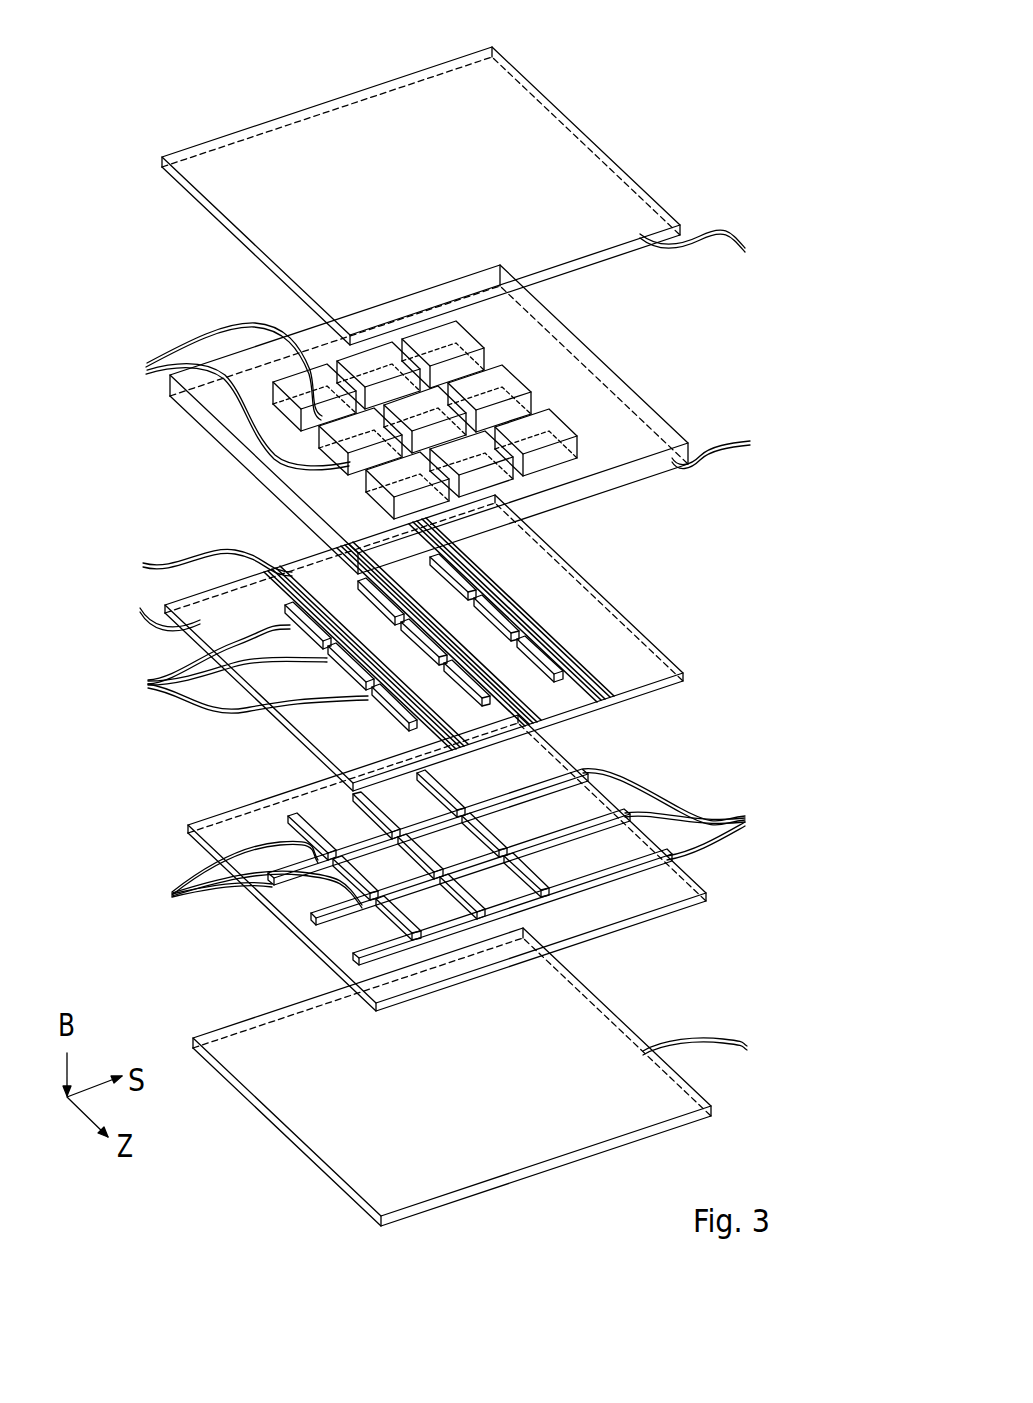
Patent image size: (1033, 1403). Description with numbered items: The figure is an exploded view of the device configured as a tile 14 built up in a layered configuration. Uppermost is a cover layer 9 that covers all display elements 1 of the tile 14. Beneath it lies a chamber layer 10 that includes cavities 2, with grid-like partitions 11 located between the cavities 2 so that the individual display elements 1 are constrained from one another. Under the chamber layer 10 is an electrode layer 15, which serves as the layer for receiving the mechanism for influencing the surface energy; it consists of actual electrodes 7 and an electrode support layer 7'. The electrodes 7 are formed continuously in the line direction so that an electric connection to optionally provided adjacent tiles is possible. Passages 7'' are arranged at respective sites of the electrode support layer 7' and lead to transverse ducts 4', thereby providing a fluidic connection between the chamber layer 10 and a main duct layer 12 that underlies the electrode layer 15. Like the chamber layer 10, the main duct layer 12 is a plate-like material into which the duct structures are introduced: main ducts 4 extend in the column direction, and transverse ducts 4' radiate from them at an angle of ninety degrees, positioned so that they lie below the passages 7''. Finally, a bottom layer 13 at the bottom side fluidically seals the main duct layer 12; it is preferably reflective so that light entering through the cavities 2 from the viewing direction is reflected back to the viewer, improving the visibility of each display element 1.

The display elements 1 is at (588, 418).
The cavities 2 is at (531, 420).
The main ducts 4 is at (517, 867).
The transverse ducts 4' is at (345, 855).
The electrodes 7 is at (293, 649).
The electrode support layer 7' is at (329, 634).
The passages 7'' is at (364, 624).
The cover layer 9 is at (703, 256).
The chamber layer 10 is at (477, 419).
The grid-like partitions 11 is at (229, 396).
The main duct layer 12 is at (672, 753).
The bottom layer 13 is at (485, 1077).
The tile 14 is at (708, 100).
The electrode layer 15 is at (675, 560).